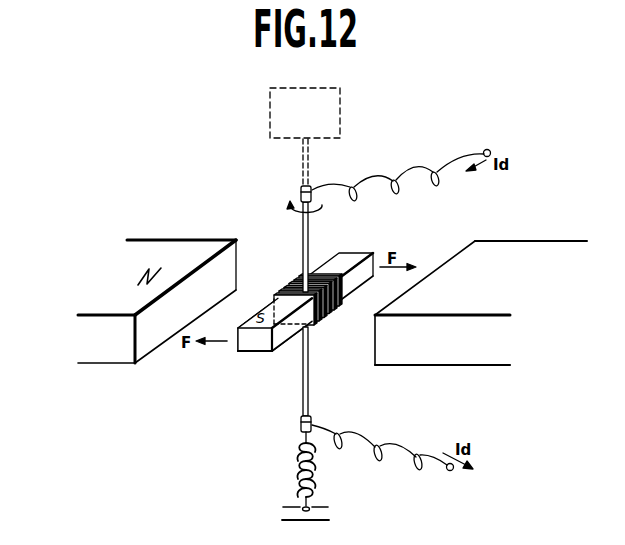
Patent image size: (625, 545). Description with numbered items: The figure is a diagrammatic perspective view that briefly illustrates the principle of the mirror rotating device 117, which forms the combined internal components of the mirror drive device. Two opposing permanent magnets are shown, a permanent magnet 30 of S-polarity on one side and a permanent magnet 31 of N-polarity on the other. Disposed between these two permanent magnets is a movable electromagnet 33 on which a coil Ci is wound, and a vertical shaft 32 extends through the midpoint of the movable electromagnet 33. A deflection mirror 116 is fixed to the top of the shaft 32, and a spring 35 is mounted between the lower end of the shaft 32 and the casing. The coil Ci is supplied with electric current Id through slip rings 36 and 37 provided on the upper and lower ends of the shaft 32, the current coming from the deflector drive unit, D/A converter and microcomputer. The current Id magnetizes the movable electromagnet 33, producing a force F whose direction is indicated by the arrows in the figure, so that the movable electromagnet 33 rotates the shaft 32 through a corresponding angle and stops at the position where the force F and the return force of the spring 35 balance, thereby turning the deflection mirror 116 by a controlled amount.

The deflection mirror 116 is at (341, 107).
The mirror rotating device 117 is at (475, 8).
The permanent magnet 31 is at (148, 238).
The permanent magnet 30 is at (525, 240).
The movable electromagnet 33 is at (248, 352).
The coil Ci is at (334, 309).
The vertical shaft 32 is at (303, 253).
The slip ring 36 is at (300, 191).
The slip ring 37 is at (303, 426).
The spring 35 is at (298, 476).